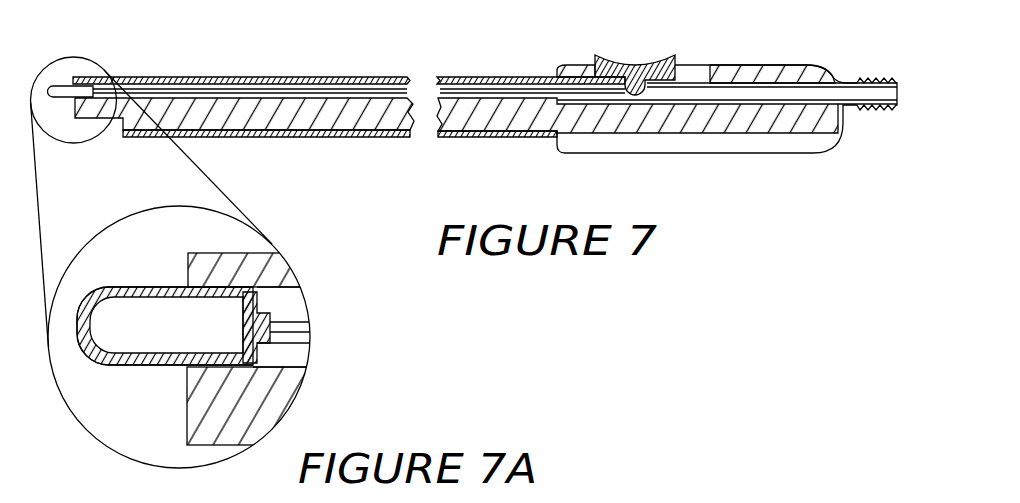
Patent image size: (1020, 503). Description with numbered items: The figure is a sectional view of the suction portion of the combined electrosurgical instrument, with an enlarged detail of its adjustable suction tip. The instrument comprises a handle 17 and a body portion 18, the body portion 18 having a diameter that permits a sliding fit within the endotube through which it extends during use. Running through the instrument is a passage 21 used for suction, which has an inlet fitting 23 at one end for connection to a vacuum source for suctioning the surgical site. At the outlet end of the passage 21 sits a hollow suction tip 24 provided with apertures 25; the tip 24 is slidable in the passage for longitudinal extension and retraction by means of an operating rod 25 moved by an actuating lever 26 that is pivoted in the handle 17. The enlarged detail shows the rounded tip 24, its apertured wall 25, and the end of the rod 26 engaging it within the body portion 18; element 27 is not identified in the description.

In FIG. 7, the handle 17 is at (800, 65).
In FIG. 7A, the body portion 18 is at (243, 253).
In FIG. 7, the passage 21 is at (735, 92).
In FIG. 7, the inlet fitting 23 is at (885, 78).
In FIG. 7, the hollow suction tip 24 is at (60, 84).
In FIG. 7A, the hollow suction tip 24 is at (92, 293).
In FIG. 7A, the apertures 25 is at (138, 290).
In FIG. 7, the actuating lever 26 is at (205, 88).
In FIG. 7A, the actuating lever 26 is at (287, 325).
In FIG. 7, the retaining wedge 27 is at (617, 62).